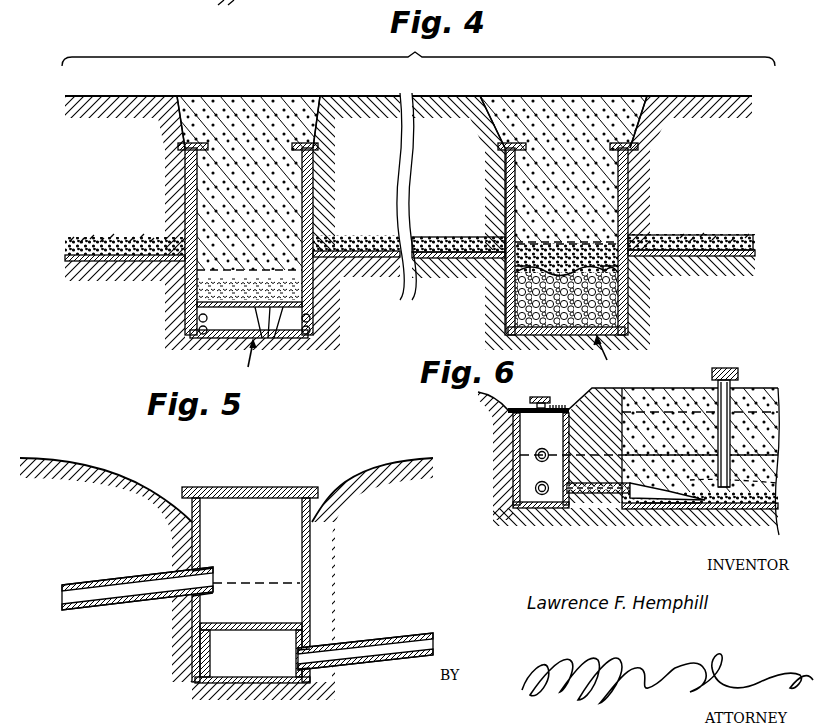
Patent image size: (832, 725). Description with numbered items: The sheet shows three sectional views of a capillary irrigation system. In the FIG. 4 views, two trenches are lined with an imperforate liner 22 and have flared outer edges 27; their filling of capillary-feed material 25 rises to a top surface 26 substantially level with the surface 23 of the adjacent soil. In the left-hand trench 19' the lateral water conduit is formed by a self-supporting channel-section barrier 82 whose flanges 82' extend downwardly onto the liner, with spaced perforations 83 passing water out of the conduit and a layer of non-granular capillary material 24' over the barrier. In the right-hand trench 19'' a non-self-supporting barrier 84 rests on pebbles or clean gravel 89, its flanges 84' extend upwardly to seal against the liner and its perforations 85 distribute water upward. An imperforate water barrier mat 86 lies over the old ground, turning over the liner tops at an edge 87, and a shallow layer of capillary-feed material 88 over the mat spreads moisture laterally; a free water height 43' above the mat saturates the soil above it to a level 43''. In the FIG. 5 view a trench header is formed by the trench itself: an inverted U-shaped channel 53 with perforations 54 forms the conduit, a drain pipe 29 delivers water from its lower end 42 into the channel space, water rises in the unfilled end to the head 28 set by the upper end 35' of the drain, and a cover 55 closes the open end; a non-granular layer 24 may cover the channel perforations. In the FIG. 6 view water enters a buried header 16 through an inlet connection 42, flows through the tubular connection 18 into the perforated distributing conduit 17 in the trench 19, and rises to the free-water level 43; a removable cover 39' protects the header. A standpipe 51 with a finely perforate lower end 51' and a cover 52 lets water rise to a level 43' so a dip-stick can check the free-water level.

In FIG. 6, the header 16 is at (517, 430).
In FIG. 6, the perforated distributing conduit 17 is at (683, 510).
In FIG. 6, the tubular connection 18 is at (595, 493).
In FIG. 6, the trench 19 is at (670, 529).
In FIG. 4, the trench 19' is at (239, 362).
In FIG. 4, the trench 19'' is at (615, 358).
In FIG. 6, the trench 19'' is at (622, 369).
In FIG. 4, the imperforate liner 22 is at (193, 298).
In FIG. 5, the imperforate liner 22 is at (310, 555).
In FIG. 6, the imperforate liner 22 is at (773, 507).
In FIG. 4, the surface of the soil 23 is at (362, 97).
In FIG. 5, the surface of the soil 23 is at (88, 460).
In FIG. 6, the surface of the soil 23 is at (602, 388).
In FIG. 6, the non-granular capillary material 24 is at (714, 489).
In FIG. 4, the non-granular capillary material 24' is at (455, 267).
In FIG. 6, the capillary-feed material 25 is at (755, 422).
In FIG. 4, the top surface 26 is at (235, 95).
In FIG. 6, the top surface 26 is at (697, 388).
In FIG. 4, the flared outer edges 27 is at (180, 112).
In FIG. 5, the head of water 28 is at (277, 582).
In FIG. 6, the head of water 28 is at (527, 450).
In FIG. 5, the drain pipe 29 is at (110, 575).
In FIG. 5, the upper end of drain 35' is at (217, 562).
In FIG. 6, the upper end of drain 35' is at (573, 439).
In FIG. 6, the removable cover 39' is at (536, 388).
In FIG. 5, the inlet connection 42 is at (298, 657).
In FIG. 6, the inlet connection 42 is at (537, 488).
In FIG. 4, the free-water level 43 is at (276, 287).
In FIG. 6, the free-water level 43 is at (716, 444).
In FIG. 4, the free-water level in standpipe 43' is at (600, 221).
In FIG. 6, the free-water level in standpipe 43' is at (750, 470).
In FIG. 4, the saturation level 43'' is at (582, 216).
In FIG. 6, the standpipe 51 is at (746, 425).
In FIG. 6, the finely perforate lower end 51' is at (743, 521).
In FIG. 6, the cover 52 is at (722, 368).
In FIG. 5, the U-shaped channel 53 is at (208, 665).
In FIG. 5, the perforations 54 is at (277, 622).
In FIG. 5, the cover 55 is at (237, 488).
In FIG. 4, the barrier 82 is at (210, 323).
In FIG. 4, the flanges 82' is at (255, 341).
In FIG. 4, the perforations 83 is at (270, 347).
In FIG. 4, the barrier 84 is at (597, 287).
In FIG. 4, the flanges 84' is at (577, 285).
In FIG. 4, the perforations 85 is at (510, 277).
In FIG. 4, the water barrier mat 86 is at (125, 245).
In FIG. 4, the edge 87 is at (178, 147).
In FIG. 4, the layer of capillary-feed material 88 is at (367, 243).
In FIG. 4, the pebbles or clean gravel 89 is at (510, 313).